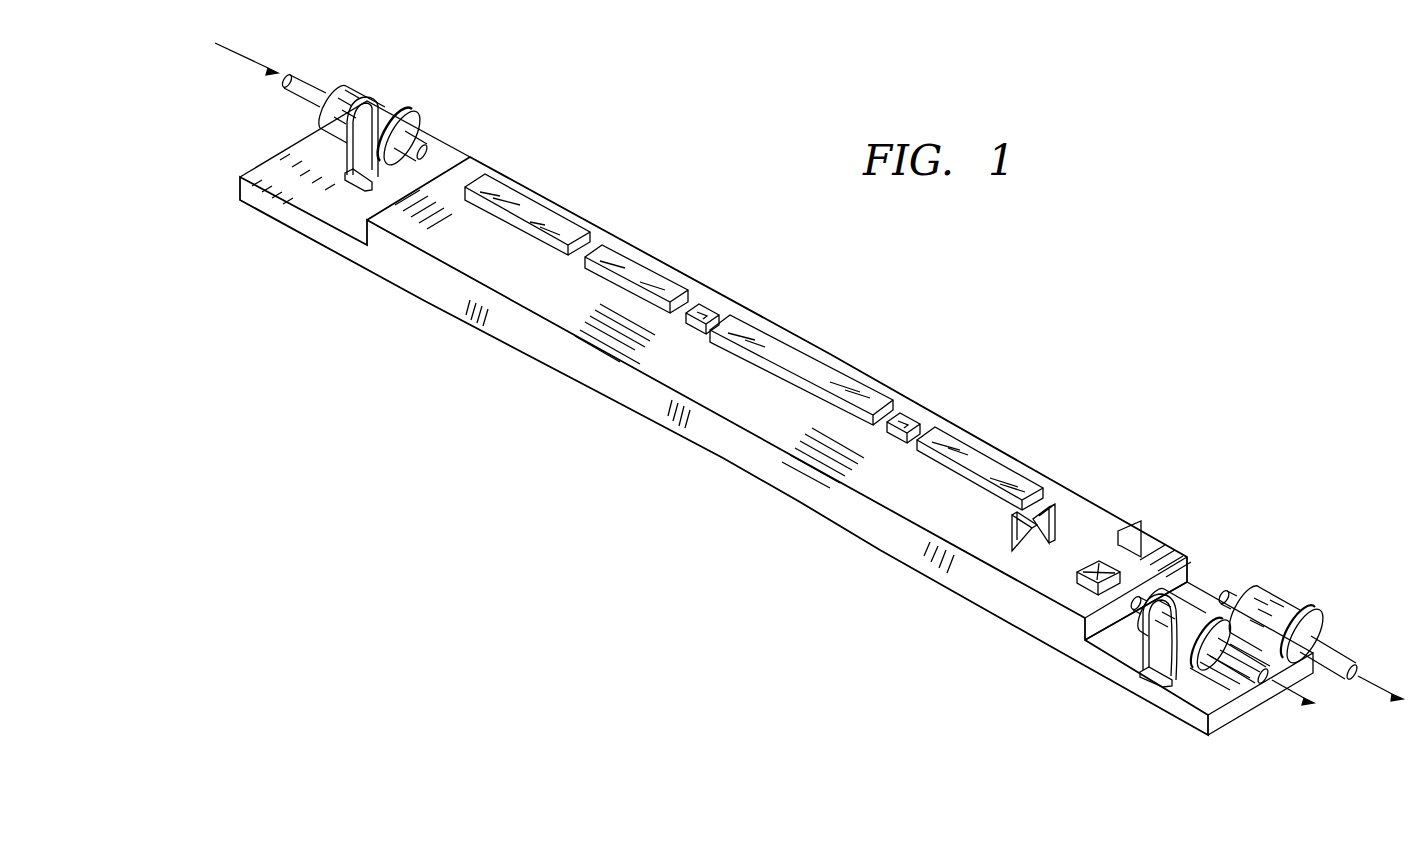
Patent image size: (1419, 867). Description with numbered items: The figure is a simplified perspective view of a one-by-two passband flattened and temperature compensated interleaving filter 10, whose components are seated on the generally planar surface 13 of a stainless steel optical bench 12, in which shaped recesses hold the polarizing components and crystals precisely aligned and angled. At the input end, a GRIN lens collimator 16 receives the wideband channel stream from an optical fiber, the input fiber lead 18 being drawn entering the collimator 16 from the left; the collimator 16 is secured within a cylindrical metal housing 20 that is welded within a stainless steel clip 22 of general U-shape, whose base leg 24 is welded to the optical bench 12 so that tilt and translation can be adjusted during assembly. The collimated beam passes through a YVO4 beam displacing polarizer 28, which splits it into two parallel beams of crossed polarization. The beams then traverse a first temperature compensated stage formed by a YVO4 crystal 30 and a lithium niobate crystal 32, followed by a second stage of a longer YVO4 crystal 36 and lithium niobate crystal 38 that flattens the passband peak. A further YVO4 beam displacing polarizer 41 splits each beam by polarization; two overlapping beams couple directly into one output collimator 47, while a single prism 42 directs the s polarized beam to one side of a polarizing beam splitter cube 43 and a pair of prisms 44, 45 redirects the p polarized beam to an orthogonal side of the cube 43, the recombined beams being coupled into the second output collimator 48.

The interleaving filter 10 is at (934, 320).
The optical bench 12 is at (806, 519).
The planar surface 13 is at (803, 437).
The collimator 16 is at (427, 132).
The input shaft 18 is at (300, 80).
The cylindrical metal housing 20 is at (348, 92).
The clip 22 is at (384, 110).
The base leg 24 is at (357, 163).
The beam displacing polarizer 28 is at (510, 195).
The YVO4 crystal 30 is at (617, 257).
The lithium niobate crystal 32 is at (700, 302).
The YVO4 crystal 36 is at (806, 360).
The lithium niobate crystal 38 is at (900, 415).
The beam displacing polarizer 41 is at (977, 458).
The prism 42 is at (1140, 523).
The polarizing beam splitter cube 43 is at (1090, 587).
The prism 44 is at (1040, 512).
The prism 45 is at (1010, 518).
The output collimator 47 is at (1232, 578).
The output collimator 48 is at (1124, 620).